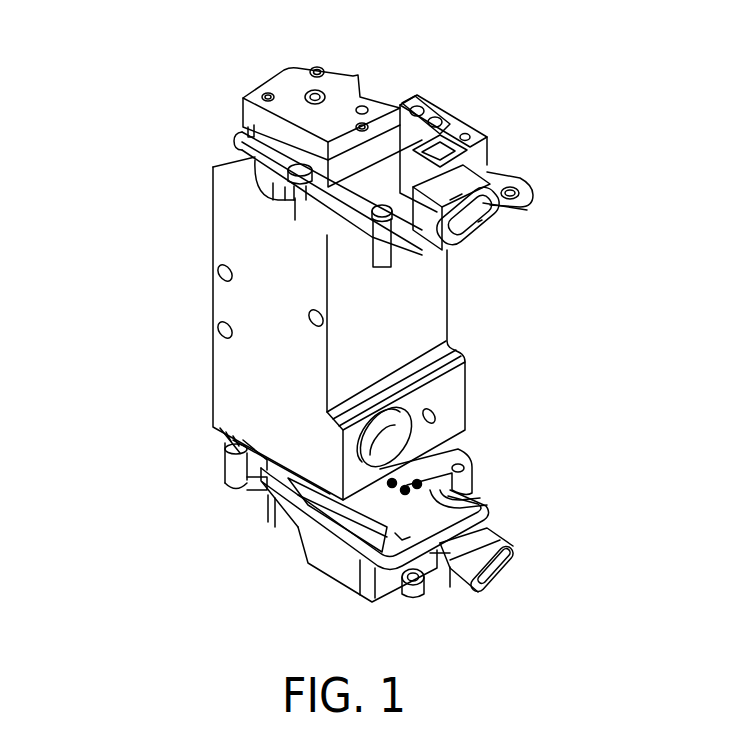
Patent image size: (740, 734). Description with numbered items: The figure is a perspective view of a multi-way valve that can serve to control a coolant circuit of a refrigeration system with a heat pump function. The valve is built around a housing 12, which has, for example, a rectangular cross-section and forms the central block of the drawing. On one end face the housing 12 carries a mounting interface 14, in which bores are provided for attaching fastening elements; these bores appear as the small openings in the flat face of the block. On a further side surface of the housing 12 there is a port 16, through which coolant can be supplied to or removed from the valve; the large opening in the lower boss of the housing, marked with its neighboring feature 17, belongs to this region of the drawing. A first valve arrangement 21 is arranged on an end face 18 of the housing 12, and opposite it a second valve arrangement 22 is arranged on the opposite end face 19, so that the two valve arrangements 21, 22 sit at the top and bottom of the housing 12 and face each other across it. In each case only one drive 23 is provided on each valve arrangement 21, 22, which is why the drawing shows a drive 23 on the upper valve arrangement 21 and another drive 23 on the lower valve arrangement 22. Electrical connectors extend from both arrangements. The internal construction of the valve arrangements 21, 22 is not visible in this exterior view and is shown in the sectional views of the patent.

The housing 12 is at (185, 312).
The mounting interface 14 is at (240, 362).
The port 16 is at (402, 440).
The bore 17 is at (397, 423).
The end face 18 is at (233, 160).
The opposite end face 19 is at (215, 425).
The first valve arrangement 21 is at (503, 130).
The second valve arrangement 22 is at (504, 493).
The drive 23 is at (228, 80).